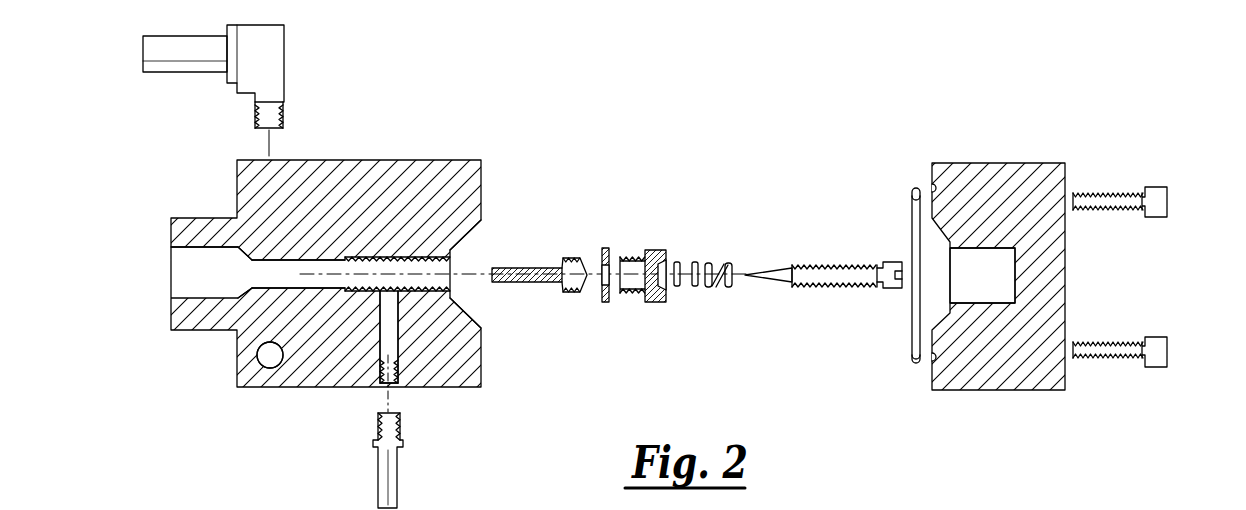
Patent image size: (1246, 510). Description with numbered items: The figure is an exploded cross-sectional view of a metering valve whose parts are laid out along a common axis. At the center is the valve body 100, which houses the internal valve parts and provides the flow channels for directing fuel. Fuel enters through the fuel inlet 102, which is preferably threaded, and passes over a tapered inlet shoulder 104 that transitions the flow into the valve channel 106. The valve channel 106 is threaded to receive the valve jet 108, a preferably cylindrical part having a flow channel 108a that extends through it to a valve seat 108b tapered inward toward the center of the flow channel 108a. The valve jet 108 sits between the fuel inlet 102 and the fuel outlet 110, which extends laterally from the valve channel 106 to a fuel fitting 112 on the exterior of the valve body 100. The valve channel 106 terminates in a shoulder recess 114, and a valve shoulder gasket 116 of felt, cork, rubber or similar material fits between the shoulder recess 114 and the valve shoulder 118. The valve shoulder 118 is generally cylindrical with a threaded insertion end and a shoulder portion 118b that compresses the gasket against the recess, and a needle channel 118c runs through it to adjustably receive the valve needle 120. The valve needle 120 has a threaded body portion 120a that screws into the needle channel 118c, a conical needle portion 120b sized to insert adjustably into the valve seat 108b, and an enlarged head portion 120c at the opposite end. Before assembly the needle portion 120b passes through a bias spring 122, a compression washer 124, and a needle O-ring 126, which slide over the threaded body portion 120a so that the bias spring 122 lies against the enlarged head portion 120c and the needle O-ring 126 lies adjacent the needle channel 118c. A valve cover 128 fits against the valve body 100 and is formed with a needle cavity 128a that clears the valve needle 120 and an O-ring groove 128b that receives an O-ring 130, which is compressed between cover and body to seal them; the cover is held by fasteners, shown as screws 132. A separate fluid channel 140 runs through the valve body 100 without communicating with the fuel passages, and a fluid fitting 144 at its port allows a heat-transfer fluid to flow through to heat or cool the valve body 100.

The valve body 100 is at (307, 388).
The fuel inlet 102 is at (197, 247).
The tapered inlet shoulder 104 is at (240, 288).
The valve channel 106 is at (325, 265).
The valve jet 108 is at (543, 304).
The flow channel 108a is at (556, 268).
The valve seat 108b is at (590, 286).
The fuel outlet 110 is at (413, 337).
The fuel fitting 112 is at (398, 472).
The shoulder recess 114 is at (465, 240).
The valve shoulder gasket 116 is at (606, 248).
The valve shoulder 118 is at (658, 276).
The shoulder portion 118b is at (633, 258).
The needle channel 118c is at (660, 283).
The valve needle 120 is at (823, 249).
The threaded body portion 120a is at (857, 268).
The conical needle portion 120b is at (770, 278).
The enlarged head portion 120c is at (895, 262).
The bias spring 122 is at (727, 262).
The compression washer 124 is at (696, 288).
The needle O-ring 126 is at (677, 262).
The valve cover 128 is at (955, 271).
The needle cavity 128a is at (1003, 282).
The O-ring groove 128b is at (932, 357).
The O-ring 130 is at (912, 358).
The screws 132 is at (1156, 343).
The fluid channel 140 is at (268, 368).
The fluid fitting 144 is at (275, 43).